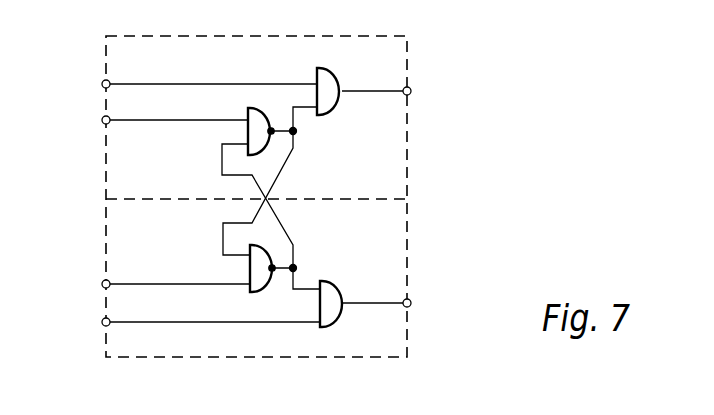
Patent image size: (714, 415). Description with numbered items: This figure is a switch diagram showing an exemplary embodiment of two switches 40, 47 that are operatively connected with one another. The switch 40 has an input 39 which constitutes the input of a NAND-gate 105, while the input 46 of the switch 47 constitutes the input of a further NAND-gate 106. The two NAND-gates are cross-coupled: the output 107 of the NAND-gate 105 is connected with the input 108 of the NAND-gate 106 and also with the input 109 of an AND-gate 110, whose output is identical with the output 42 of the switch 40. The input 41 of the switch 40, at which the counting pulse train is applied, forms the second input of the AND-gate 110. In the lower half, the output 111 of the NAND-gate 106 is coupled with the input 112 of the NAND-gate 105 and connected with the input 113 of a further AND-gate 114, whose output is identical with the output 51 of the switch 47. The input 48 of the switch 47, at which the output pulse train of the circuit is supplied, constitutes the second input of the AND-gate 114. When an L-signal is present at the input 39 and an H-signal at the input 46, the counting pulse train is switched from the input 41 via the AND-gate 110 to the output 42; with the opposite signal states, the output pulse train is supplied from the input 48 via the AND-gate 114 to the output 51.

The switch 40 is at (333, 48).
The switch 47 is at (396, 218).
The input of the switch 40 41 is at (103, 82).
The input of the switch 40 39 is at (103, 119).
The input of the switch 47 46 is at (103, 282).
The input of the switch 47 48 is at (103, 321).
The output of the switch 40 42 is at (411, 89).
The output of the switch 47 51 is at (411, 306).
The NAND-gate 105 is at (247, 108).
The NAND-gate 106 is at (256, 286).
The output of the NAND-gate 105 107 is at (270, 127).
The input of the NAND-gate 106 108 is at (249, 257).
The input of the AND-gate 110 109 is at (312, 108).
The AND-gate 110 is at (336, 98).
The output of the NAND-gate 106 111 is at (272, 272).
The input of the NAND-gate 105 112 is at (244, 138).
The input of the AND-gate 114 113 is at (317, 287).
The AND-gate 114 is at (343, 292).